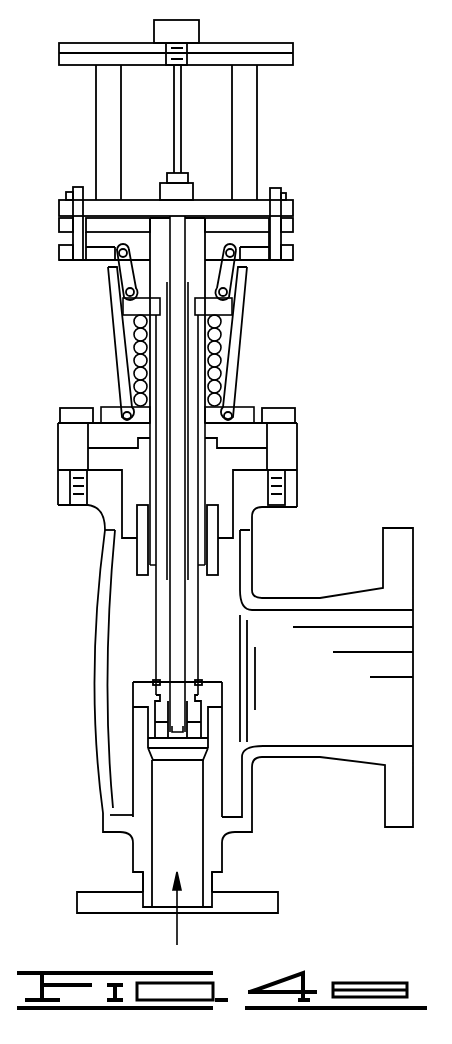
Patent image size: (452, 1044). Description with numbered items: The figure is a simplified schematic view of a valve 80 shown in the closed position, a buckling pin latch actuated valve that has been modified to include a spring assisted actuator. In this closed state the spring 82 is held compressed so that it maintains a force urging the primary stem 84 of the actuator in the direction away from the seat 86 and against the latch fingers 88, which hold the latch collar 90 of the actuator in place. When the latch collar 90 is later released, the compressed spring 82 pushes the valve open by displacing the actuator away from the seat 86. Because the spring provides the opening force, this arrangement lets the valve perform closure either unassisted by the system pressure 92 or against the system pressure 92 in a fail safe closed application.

The valve 80 is at (286, 100).
The latch collar 90 is at (293, 252).
The spring 82 is at (222, 340).
The latch fingers 88 is at (240, 347).
The primary stem 84 is at (157, 642).
The seat 86 is at (217, 720).
The system pressure 92 is at (195, 838).